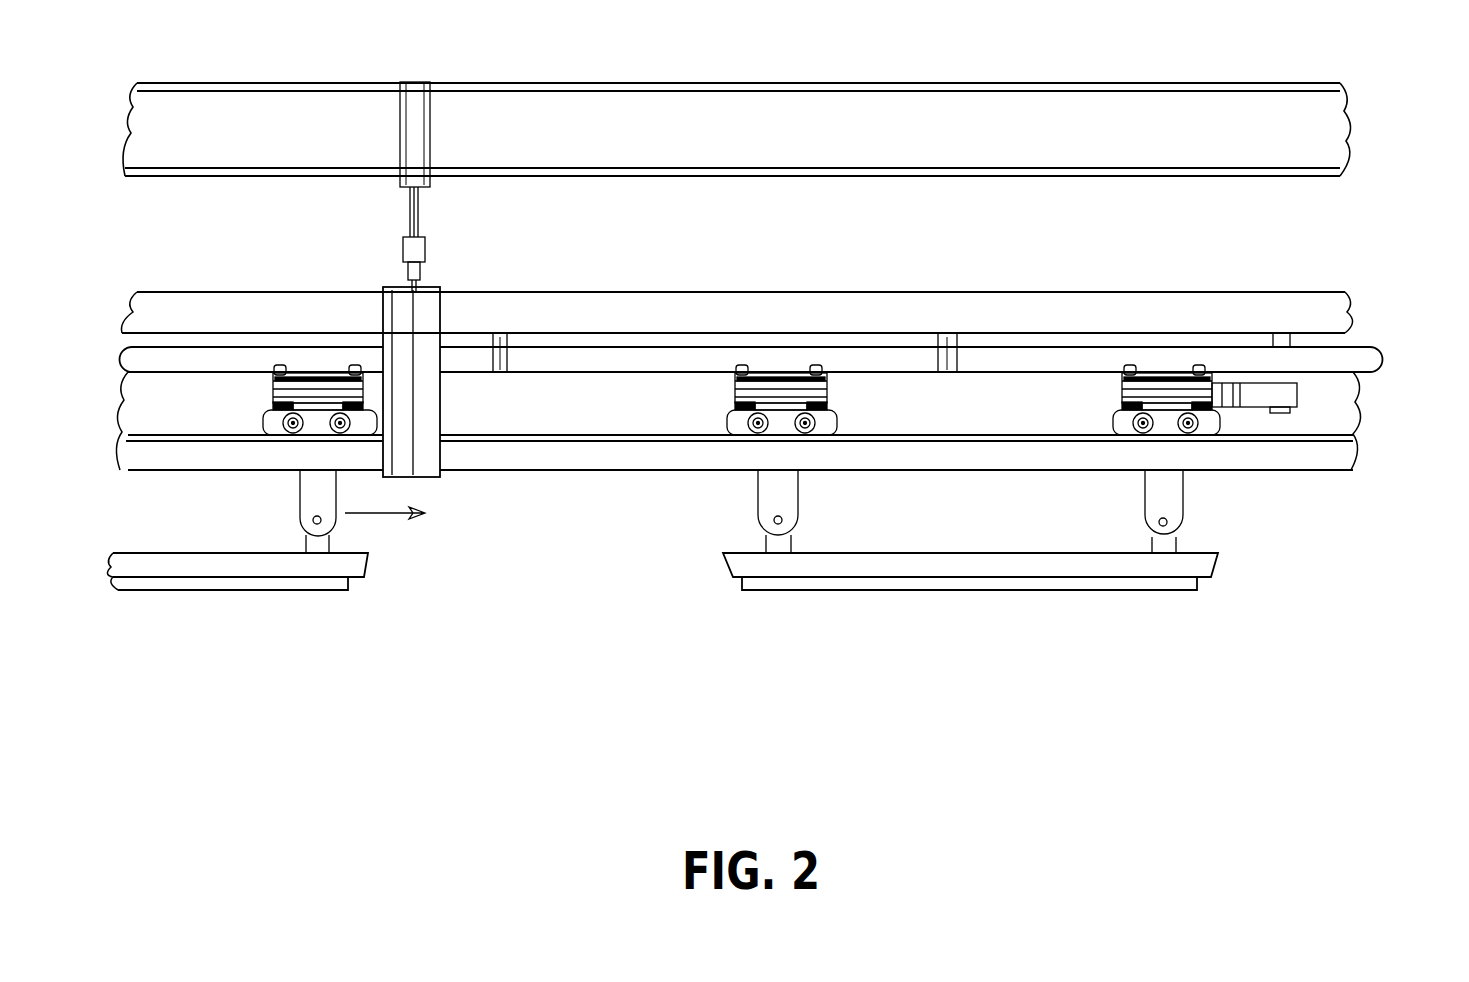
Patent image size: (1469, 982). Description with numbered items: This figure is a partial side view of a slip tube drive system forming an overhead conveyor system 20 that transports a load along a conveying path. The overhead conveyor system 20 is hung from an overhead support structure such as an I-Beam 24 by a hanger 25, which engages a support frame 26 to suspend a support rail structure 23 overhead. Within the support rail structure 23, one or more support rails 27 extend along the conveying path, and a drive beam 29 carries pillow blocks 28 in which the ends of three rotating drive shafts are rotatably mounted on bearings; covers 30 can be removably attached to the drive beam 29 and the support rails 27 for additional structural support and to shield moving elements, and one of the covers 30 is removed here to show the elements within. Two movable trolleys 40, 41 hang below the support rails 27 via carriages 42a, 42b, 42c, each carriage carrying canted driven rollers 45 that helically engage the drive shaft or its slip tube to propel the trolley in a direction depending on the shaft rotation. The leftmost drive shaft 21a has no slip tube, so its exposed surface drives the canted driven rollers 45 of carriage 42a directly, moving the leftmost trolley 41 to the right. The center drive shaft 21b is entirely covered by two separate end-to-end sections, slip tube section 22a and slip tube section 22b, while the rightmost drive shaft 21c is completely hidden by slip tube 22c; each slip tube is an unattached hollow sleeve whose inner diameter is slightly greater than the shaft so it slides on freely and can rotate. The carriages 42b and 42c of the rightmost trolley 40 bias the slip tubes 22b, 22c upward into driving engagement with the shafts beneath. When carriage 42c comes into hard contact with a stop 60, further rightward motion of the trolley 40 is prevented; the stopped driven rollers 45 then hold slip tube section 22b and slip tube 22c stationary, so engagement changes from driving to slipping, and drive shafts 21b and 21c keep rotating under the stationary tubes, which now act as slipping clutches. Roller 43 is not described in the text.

The overhead conveyor system 20 is at (635, 655).
The leftmost rotating drive shaft 21a is at (197, 363).
The center rotating drive shaft 21b is at (722, 368).
The rightmost rotating drive shaft 21c is at (1375, 367).
The slip tube section 22a is at (623, 367).
The slip tube section 22b is at (882, 368).
The slip tube 22c is at (1353, 348).
The support rail structure 23 is at (597, 520).
The I-Beam 24 is at (870, 122).
The hanger 25 is at (418, 216).
The support frame 26 is at (440, 296).
The support rails 27 is at (550, 467).
The pillow block 28 is at (500, 373).
The drive beam 29 is at (1033, 327).
The covers 30 is at (580, 413).
The trolley 40 is at (1232, 566).
The trolley 41 is at (382, 566).
The carriage 42a is at (252, 408).
The carriage 42b is at (718, 415).
The carriage 42c is at (1107, 414).
The roller 43 is at (320, 418).
The canted driven rollers 45 is at (355, 366).
The stop 60 is at (1225, 385).